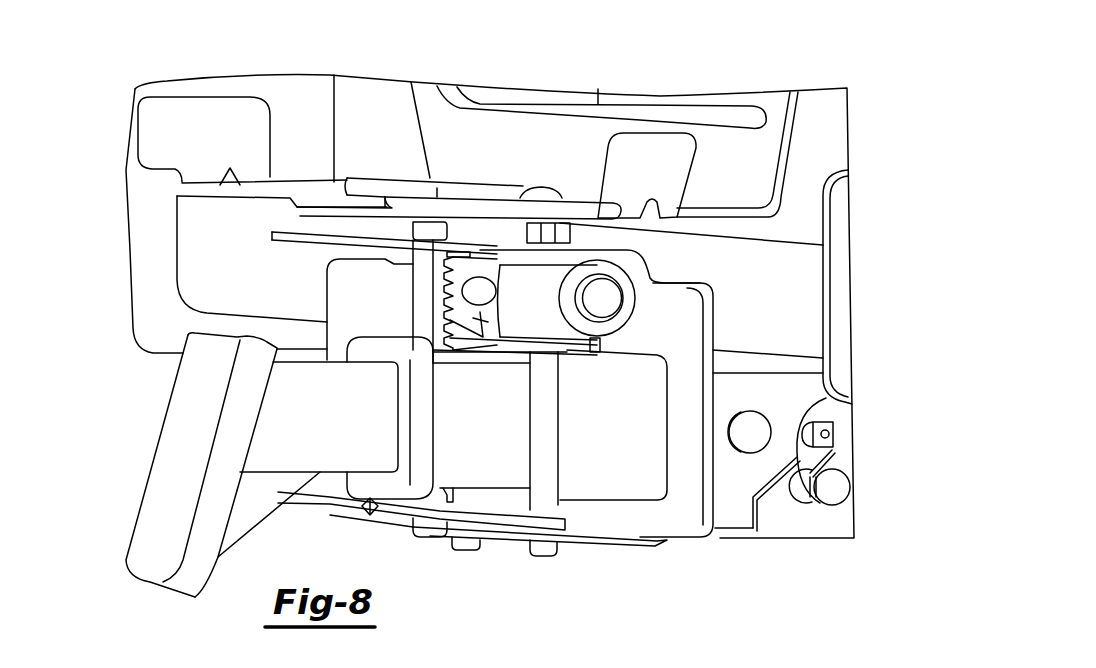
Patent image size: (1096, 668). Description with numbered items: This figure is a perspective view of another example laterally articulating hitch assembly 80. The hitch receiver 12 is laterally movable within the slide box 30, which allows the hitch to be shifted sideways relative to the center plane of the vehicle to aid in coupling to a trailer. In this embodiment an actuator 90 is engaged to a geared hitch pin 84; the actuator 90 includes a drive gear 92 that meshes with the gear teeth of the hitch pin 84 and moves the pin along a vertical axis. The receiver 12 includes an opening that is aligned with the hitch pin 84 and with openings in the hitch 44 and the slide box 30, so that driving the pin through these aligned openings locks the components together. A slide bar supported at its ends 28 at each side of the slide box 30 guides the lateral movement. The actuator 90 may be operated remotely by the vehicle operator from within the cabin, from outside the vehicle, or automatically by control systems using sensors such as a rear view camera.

The laterally articulating hitch assembly 80 is at (707, 67).
The hitch 44 is at (200, 412).
The hitch receiver 12 is at (485, 453).
The geared hitch pin 84 is at (430, 297).
The drive gear 92 is at (473, 272).
The actuator 90 is at (601, 298).
The slide box 30 is at (687, 507).
The ends 28 is at (750, 433).